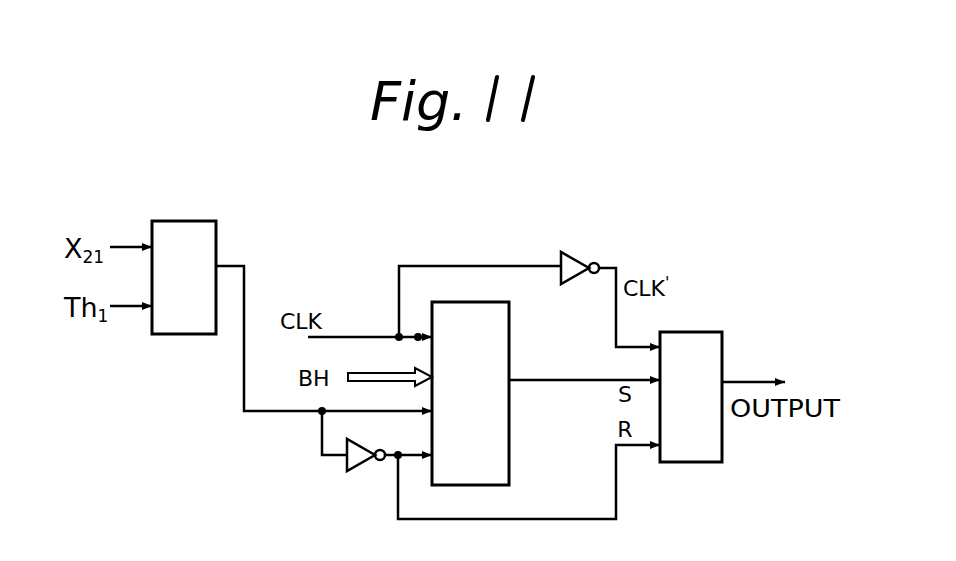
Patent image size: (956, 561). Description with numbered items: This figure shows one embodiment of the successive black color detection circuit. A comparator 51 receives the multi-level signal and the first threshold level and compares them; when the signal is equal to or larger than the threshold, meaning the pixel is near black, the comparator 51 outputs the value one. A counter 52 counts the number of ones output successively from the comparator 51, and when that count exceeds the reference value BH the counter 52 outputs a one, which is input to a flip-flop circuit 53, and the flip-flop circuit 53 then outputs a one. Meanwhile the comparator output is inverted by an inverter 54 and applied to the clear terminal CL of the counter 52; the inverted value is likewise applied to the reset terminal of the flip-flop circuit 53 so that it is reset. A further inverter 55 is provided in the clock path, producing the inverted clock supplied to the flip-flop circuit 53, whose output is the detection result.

The comparator 51 is at (198, 221).
The counter 52 is at (509, 319).
The flip-flop circuit 53 is at (722, 340).
The inverter 54 is at (356, 474).
The inverter 55 is at (578, 252).